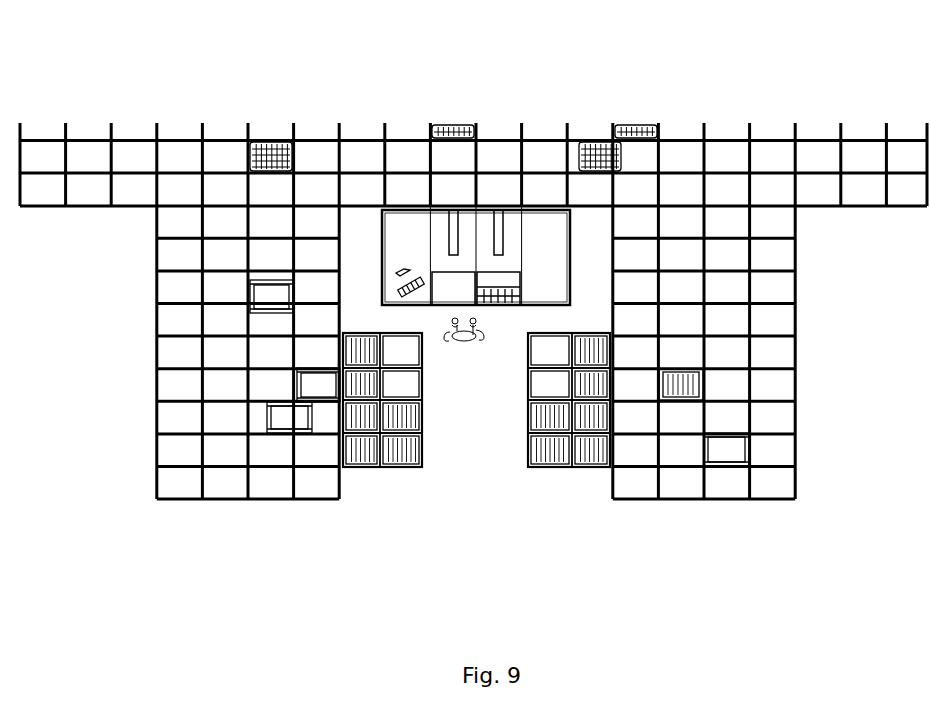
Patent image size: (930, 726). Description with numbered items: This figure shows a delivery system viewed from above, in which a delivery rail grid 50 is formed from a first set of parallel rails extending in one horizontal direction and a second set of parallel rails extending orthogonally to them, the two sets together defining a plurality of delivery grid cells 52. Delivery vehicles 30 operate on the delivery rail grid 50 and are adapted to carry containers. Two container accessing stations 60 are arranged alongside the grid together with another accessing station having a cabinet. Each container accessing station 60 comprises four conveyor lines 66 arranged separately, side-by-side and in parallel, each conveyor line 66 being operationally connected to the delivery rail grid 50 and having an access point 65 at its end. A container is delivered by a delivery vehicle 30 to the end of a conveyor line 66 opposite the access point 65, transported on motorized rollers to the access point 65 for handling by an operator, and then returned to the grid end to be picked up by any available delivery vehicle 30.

The delivery vehicle 30 is at (253, 140).
The delivery rail grid 50 is at (783, 370).
The delivery grid cells 52 is at (767, 257).
The container accessing station 60 is at (395, 467).
The access point 65 is at (412, 355).
The conveyor line 66 is at (402, 417).